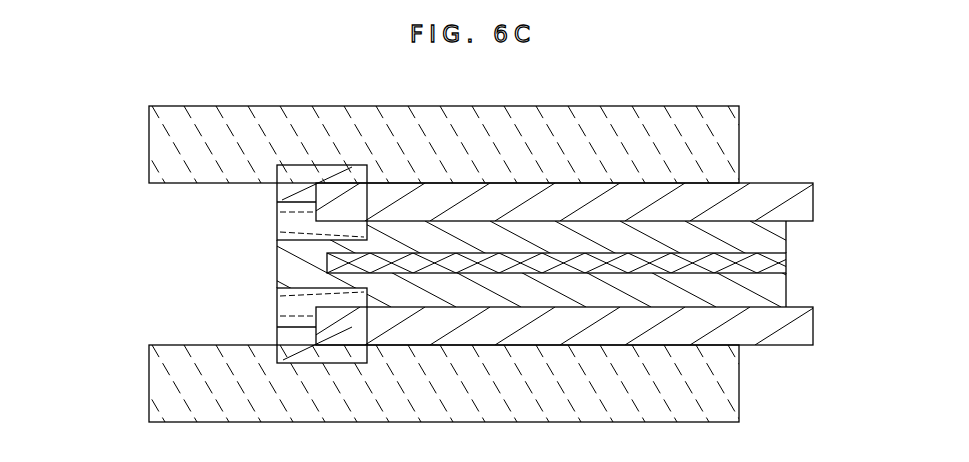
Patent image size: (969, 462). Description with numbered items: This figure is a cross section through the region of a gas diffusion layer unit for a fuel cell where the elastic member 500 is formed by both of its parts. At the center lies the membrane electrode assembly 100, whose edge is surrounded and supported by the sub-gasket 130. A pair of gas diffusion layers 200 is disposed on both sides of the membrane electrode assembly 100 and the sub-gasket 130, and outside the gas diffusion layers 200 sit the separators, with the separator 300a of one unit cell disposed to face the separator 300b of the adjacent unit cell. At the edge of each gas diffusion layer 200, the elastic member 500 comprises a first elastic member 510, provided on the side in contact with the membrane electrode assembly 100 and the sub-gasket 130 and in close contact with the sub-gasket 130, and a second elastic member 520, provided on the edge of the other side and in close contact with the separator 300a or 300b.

The separator 300a is at (162, 152).
The separator 300b is at (162, 388).
The gas diffusion layer 200 is at (797, 205).
The sub-gasket 130 is at (771, 240).
The membrane electrode assembly 100 is at (771, 268).
The elastic member 500 is at (181, 205).
The first elastic member 510 is at (283, 225).
The second elastic member 520 is at (283, 190).